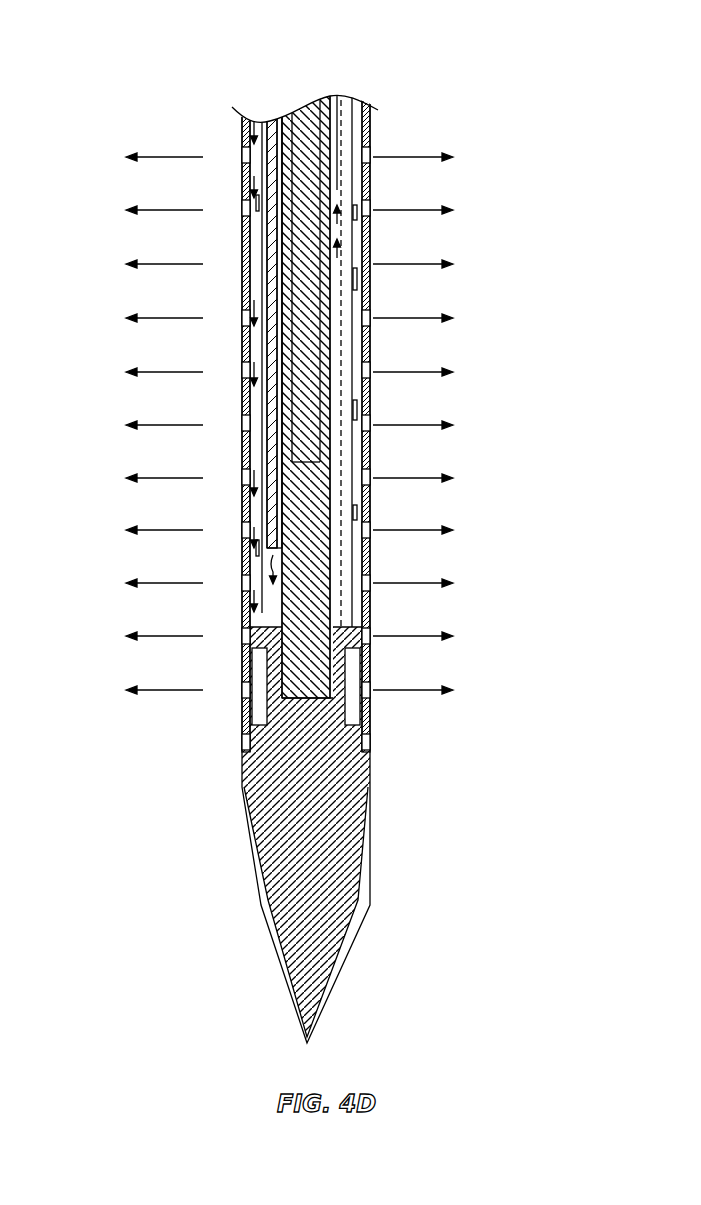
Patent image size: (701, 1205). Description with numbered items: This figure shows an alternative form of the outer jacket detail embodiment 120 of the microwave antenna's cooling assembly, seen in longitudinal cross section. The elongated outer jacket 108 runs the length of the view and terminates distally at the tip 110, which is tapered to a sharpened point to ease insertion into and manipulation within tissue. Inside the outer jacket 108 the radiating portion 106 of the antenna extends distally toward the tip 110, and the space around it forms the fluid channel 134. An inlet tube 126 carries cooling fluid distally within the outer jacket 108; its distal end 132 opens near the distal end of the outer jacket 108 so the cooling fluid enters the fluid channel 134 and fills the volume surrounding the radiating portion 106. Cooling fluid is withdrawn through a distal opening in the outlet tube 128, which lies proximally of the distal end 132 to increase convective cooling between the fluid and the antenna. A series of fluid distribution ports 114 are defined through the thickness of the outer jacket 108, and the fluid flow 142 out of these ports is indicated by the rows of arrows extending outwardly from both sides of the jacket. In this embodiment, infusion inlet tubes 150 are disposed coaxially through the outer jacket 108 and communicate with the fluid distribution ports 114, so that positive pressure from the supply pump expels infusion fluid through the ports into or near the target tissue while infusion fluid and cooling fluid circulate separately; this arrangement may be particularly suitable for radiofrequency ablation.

The outer jacket detail embodiment 120 is at (326, 527).
The outlet tube 128 is at (368, 118).
The fluid distribution ports 114 is at (242, 208).
The inlet tube 126 is at (242, 240).
The fluid channel 134 is at (352, 243).
The outer jacket 108 is at (370, 290).
The fluid flow 142 is at (222, 402).
The infusion inlet tubes 150 is at (366, 432).
The distal end of inlet tube 132 is at (270, 480).
The radiating portion 106 is at (325, 553).
The tip 110 is at (325, 812).